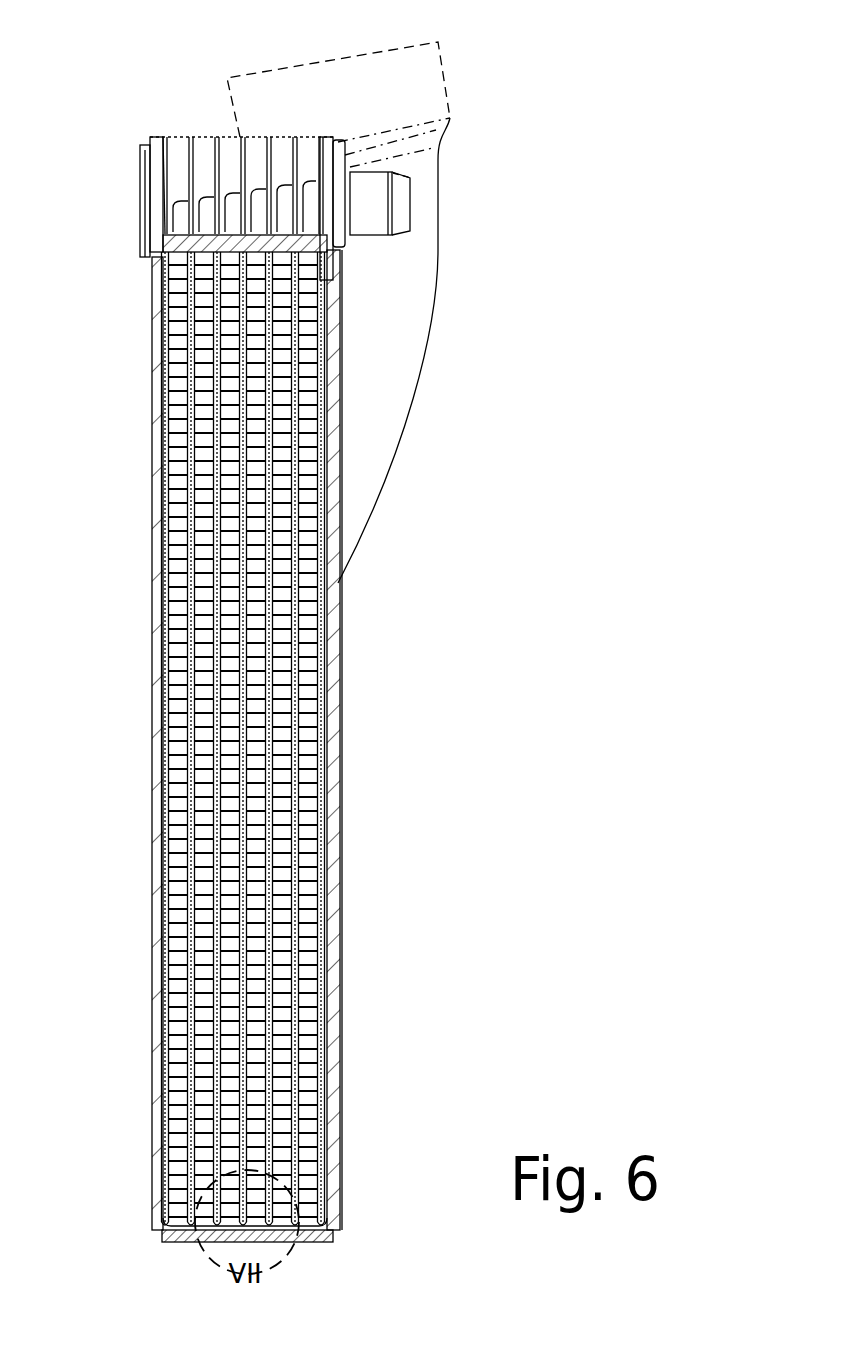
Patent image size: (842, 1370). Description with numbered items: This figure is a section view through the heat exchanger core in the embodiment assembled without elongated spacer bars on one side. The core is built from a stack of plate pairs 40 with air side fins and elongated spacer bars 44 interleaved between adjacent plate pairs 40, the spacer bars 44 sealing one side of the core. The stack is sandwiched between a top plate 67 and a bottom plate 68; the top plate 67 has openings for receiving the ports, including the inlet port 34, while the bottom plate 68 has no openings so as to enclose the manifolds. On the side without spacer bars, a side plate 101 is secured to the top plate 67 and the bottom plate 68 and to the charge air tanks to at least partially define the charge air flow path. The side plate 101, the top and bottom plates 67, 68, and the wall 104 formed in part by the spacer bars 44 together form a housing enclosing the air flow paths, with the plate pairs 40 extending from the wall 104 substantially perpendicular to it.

The plate pair 40 is at (188, 137).
The spacer bar 44 is at (293, 175).
The wall 104 is at (200, 245).
The inlet port 34 is at (372, 212).
The top plate 67 is at (342, 688).
The bottom plate 68 is at (151, 656).
The side plate 101 is at (180, 1243).